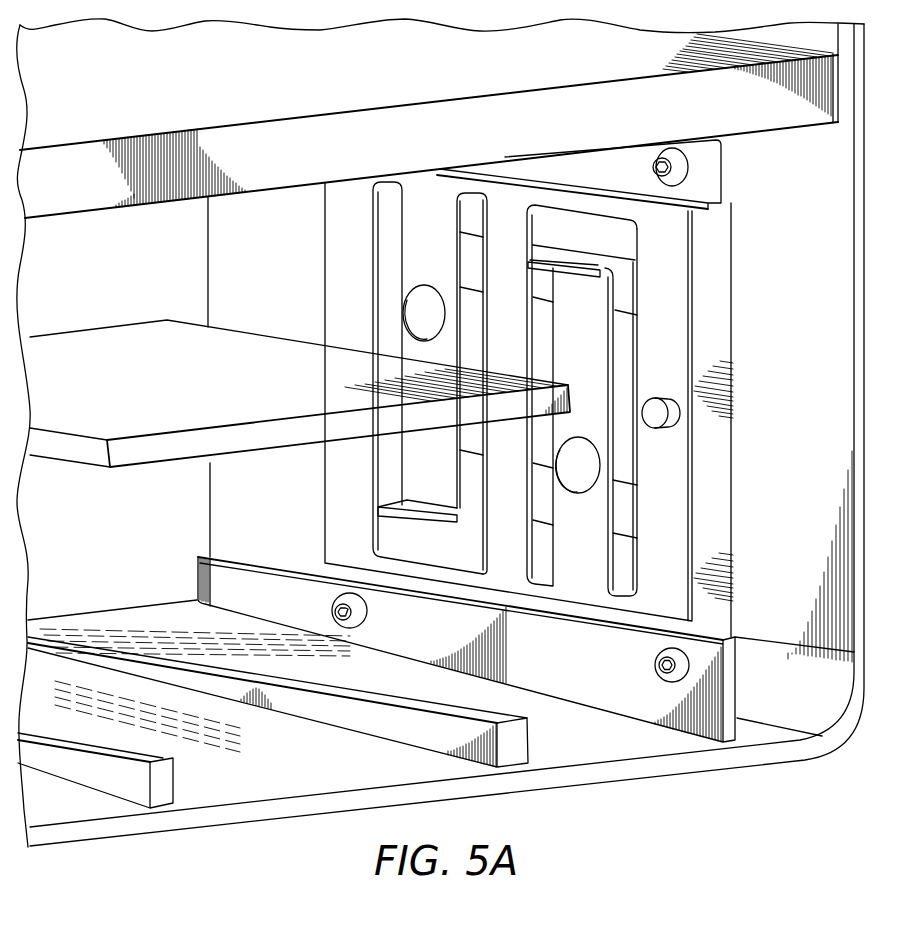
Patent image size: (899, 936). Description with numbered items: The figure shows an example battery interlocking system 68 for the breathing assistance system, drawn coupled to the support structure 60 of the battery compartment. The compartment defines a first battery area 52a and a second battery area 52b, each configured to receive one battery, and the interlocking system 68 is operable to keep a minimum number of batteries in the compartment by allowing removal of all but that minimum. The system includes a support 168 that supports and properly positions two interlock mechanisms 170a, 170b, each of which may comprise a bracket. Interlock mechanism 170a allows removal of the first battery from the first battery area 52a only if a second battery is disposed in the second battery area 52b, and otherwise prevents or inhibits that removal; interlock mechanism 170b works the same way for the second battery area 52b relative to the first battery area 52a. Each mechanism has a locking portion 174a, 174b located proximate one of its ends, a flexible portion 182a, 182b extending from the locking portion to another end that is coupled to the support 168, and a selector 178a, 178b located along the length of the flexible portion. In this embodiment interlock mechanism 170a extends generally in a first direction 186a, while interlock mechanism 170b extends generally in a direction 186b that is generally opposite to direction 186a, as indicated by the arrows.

The support structure 60 is at (763, 121).
The battery interlocking system 68 is at (752, 424).
The support 168 is at (508, 212).
The interlock mechanism 170a is at (428, 533).
The interlock mechanism 170b is at (573, 245).
The locking portion 174a is at (398, 528).
The locking portion 174b is at (580, 250).
The selector 178a is at (403, 310).
The selector 178b is at (593, 482).
The flexible portion 182a is at (413, 277).
The flexible portion 182b is at (590, 333).
The first direction 186a is at (429, 258).
The first direction 186b is at (583, 515).
The first battery area 52a is at (122, 282).
The second battery area 52b is at (124, 541).